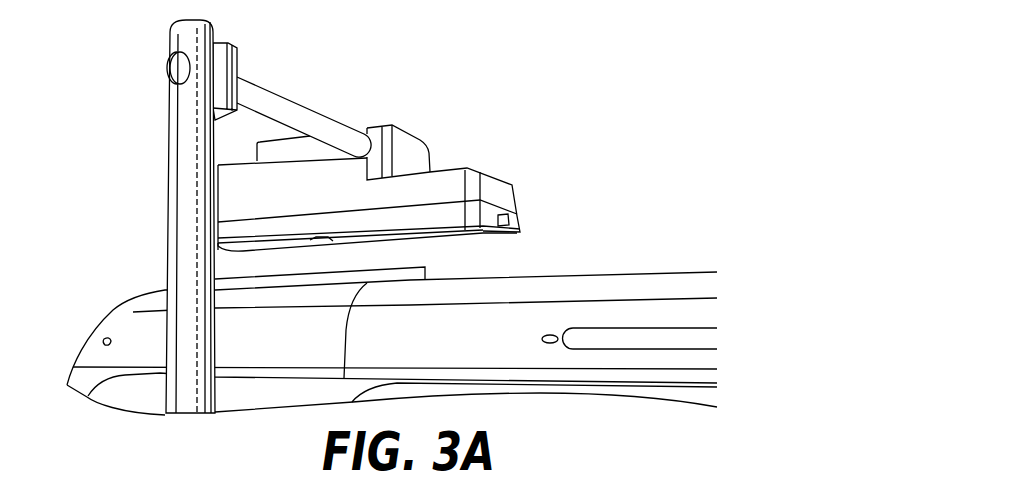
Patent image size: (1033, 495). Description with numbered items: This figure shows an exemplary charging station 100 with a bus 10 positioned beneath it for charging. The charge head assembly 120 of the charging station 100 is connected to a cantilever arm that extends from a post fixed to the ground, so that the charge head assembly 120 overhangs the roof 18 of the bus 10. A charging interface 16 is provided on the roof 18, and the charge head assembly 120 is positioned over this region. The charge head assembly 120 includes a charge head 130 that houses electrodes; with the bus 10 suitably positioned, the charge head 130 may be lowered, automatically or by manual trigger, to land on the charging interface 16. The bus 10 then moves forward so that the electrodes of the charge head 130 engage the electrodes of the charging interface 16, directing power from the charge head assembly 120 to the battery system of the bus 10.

The bus 10 is at (503, 347).
The charging interface 16 is at (403, 258).
The roof 18 is at (503, 277).
The charging station 100 is at (157, 211).
The charge head assembly 120 is at (297, 197).
The charge head 130 is at (483, 230).